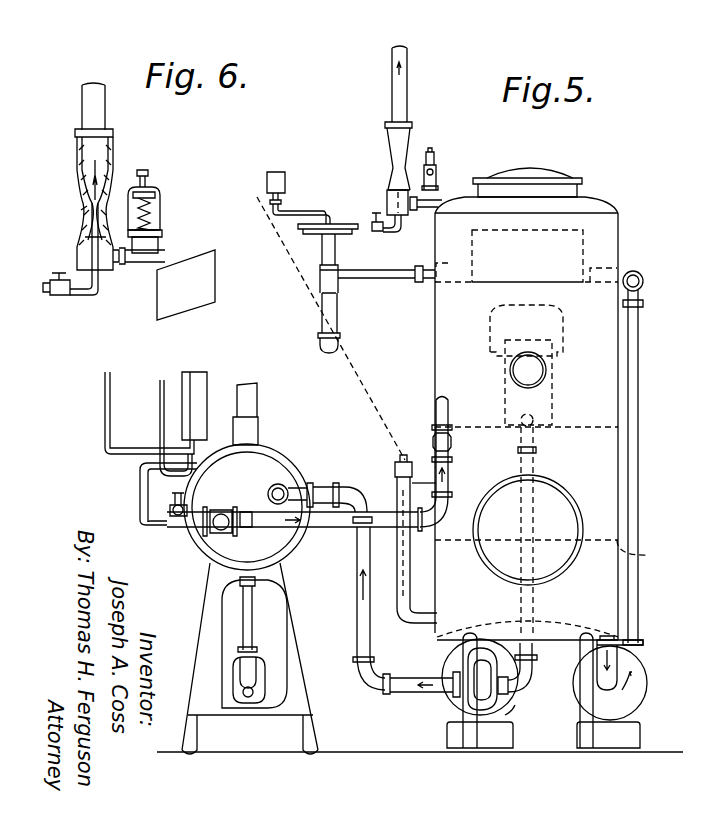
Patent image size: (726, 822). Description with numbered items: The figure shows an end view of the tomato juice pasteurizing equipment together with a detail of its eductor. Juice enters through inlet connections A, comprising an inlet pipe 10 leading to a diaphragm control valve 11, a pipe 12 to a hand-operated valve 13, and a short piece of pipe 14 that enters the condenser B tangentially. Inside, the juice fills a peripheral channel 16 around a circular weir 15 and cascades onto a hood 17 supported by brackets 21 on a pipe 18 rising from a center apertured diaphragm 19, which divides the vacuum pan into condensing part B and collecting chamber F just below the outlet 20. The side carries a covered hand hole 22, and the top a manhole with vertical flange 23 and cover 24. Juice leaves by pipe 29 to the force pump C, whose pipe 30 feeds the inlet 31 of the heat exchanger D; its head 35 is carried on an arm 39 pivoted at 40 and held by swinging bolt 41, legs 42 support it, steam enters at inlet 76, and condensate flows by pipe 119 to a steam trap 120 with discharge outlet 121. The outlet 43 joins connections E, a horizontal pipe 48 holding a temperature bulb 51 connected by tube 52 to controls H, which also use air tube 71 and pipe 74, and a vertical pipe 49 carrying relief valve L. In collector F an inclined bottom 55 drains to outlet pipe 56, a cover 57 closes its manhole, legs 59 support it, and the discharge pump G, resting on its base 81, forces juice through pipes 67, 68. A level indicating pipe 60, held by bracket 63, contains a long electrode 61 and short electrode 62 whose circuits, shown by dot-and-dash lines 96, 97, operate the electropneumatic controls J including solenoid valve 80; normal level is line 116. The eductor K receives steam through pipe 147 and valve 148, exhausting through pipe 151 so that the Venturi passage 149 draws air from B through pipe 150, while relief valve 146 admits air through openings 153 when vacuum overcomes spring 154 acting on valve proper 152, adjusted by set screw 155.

In FIG. 5, the inlet pipe 10 is at (338, 312).
In FIG. 5, the diaphragm control valve 11 is at (320, 272).
In FIG. 5, the pipe 12 is at (395, 280).
In FIG. 5, the hand-operated valve 13 is at (420, 282).
In FIG. 5, the short piece of pipe 14 is at (446, 265).
In FIG. 5, the circular weir 15 is at (583, 245).
In FIG. 5, the peripheral channel 16 is at (616, 270).
In FIG. 5, the hood 17 is at (563, 329).
In FIG. 5, the pipe 18 is at (552, 384).
In FIG. 5, the center apertured diaphragm 19 is at (574, 427).
In FIG. 5, the outlet 20 is at (534, 418).
In FIG. 5, the brackets 21 is at (552, 362).
In FIG. 5, the covered hand hole 22 is at (512, 378).
In FIG. 5, the vertical flange 23 is at (577, 190).
In FIG. 5, the cover 24 is at (532, 170).
In FIG. 5, the pipe 29 is at (509, 694).
In FIG. 5, the pipe 30 is at (357, 624).
In FIG. 5, the inlet 31 is at (283, 492).
In FIG. 5, the head 35 is at (256, 464).
In FIG. 5, the arm 39 is at (218, 510).
In FIG. 5, the pivot 40 is at (304, 506).
In FIG. 5, the swinging bolt 41 is at (173, 522).
In FIG. 5, the legs 42 is at (195, 733).
In FIG. 5, the outlet 43 is at (218, 535).
In FIG. 5, the horizontal pipe 48 is at (335, 528).
In FIG. 5, the vertical pipe 49 is at (452, 461).
In FIG. 5, the temperature actuated bulb 51 is at (243, 528).
In FIG. 5, the tube 52 is at (140, 502).
In FIG. 5, the inclined bottom 55 is at (553, 650).
In FIG. 5, the outlet pipe 56 is at (617, 648).
In FIG. 5, the cover 57 is at (553, 507).
In FIG. 5, the legs 59 is at (470, 745).
In FIG. 5, the level indicating pipe 60 is at (398, 585).
In FIG. 5, the long electrode 61 is at (400, 560).
In FIG. 5, the short electrode 62 is at (397, 488).
In FIG. 5, the bracket 63 is at (420, 482).
In FIG. 5, the pipe 67 is at (638, 523).
In FIG. 5, the pipe 68 is at (643, 281).
In FIG. 5, the tube 71 is at (108, 386).
In FIG. 5, the pipe 74 is at (158, 410).
In FIG. 5, the heat exchanger steam inlet 76 is at (252, 408).
In FIG. 5, the solenoid valve 80 is at (285, 182).
In FIG. 5, the pump base 81 is at (505, 720).
In FIG. 5, the dot-and-dash line 96 is at (430, 560).
In FIG. 5, the dot-and-dash line 97 is at (360, 372).
In FIG. 5, the line 116 is at (647, 556).
In FIG. 5, the pipe 119 is at (253, 625).
In FIG. 5, the steam trap 120 is at (263, 671).
In FIG. 5, the discharge outlet 121 is at (254, 692).
In FIG. 6, the valve 146 is at (160, 205).
In FIG. 5, the valve 146 is at (437, 168).
In FIG. 6, the steam pipe 147 is at (96, 288).
In FIG. 5, the steam pipe 147 is at (392, 223).
In FIG. 6, the valve 148 is at (56, 300).
In FIG. 5, the valve 148 is at (376, 231).
In FIG. 6, the Venturi passage 149 is at (84, 208).
In FIG. 6, the pipe 150 is at (170, 255).
In FIG. 5, the pipe 150 is at (440, 200).
In FIG. 6, the pipe 151 is at (82, 104).
In FIG. 5, the pipe 151 is at (392, 100).
In FIG. 6, the valve proper 152 is at (160, 234).
In FIG. 6, the openings 153 is at (160, 194).
In FIG. 6, the spring 154 is at (160, 214).
In FIG. 6, the set screw 155 is at (145, 168).
In FIG. 5, the inlet connections A is at (315, 289).
In FIG. 6, the condenser B is at (208, 283).
In FIG. 5, the condenser B is at (617, 241).
In FIG. 5, the force pump C is at (460, 700).
In FIG. 5, the flash heat exchanger D is at (272, 461).
In FIG. 5, the connections E is at (459, 477).
In FIG. 5, the collecting chamber F is at (612, 498).
In FIG. 5, the discharge pump G is at (633, 672).
In FIG. 5, the controls H is at (200, 384).
In FIG. 5, the electropneumatic controls J is at (387, 446).
In FIG. 6, the eductor K is at (100, 165).
In FIG. 5, the eductor K is at (400, 148).
In FIG. 5, the relief valve L is at (449, 404).